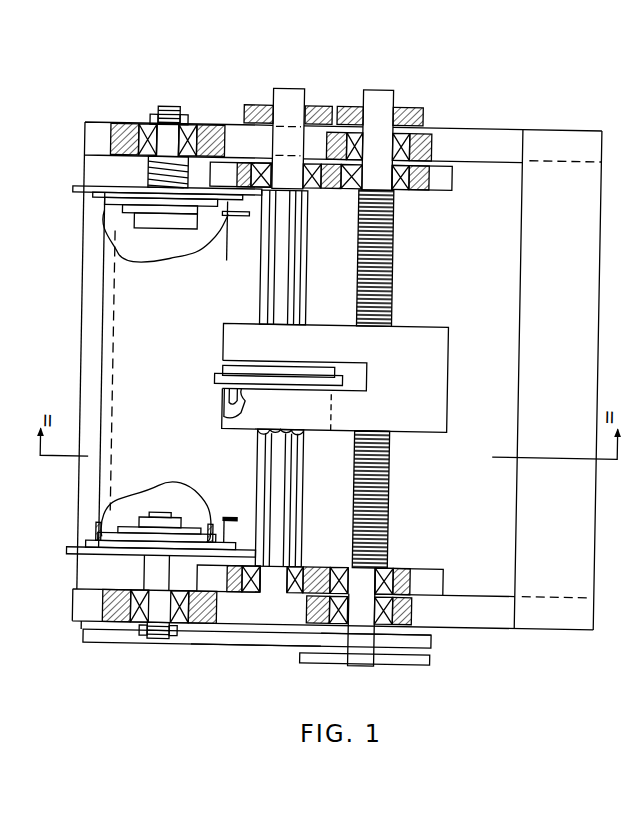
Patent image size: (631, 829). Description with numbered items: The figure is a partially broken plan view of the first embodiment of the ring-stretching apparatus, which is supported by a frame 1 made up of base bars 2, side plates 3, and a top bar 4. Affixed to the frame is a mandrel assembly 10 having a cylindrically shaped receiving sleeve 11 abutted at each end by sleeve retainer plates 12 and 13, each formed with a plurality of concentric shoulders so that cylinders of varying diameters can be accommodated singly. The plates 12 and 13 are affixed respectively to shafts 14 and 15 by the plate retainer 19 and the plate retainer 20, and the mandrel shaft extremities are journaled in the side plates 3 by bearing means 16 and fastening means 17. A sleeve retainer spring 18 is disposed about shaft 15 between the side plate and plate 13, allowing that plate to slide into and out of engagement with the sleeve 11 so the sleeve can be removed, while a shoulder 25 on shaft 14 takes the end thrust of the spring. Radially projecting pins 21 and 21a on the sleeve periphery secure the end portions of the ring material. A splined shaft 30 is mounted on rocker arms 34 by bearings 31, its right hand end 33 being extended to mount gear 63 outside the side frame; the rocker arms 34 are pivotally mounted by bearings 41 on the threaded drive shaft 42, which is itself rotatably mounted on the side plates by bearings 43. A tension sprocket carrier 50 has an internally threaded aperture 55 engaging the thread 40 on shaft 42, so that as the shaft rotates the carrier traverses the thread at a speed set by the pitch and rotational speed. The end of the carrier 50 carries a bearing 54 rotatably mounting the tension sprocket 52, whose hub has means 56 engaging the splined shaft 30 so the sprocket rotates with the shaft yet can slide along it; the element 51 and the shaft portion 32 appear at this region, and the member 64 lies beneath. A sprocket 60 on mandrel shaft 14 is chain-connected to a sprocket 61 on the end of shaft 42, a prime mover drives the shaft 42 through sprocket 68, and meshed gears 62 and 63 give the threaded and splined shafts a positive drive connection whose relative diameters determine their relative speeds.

The frame 1 is at (519, 120).
The base bars 2 is at (85, 515).
The side plates 3 is at (493, 157).
The top bar 4 is at (603, 219).
The mandrel assembly 10 is at (85, 376).
The receiving sleeve 11 is at (106, 338).
The sleeve retainer plate 12 is at (74, 551).
The sleeve retainer plate 13 is at (74, 189).
The shaft 14 is at (170, 509).
The shaft 15 is at (188, 176).
The bearing means 16 is at (214, 134).
The fastening means 17 is at (182, 108).
The sleeve retainer spring 18 is at (149, 161).
The plate retainer 19 is at (196, 511).
The plate retainer 20 is at (167, 228).
The radially projecting pin 21 is at (234, 531).
The radially projecting pin 21a is at (245, 214).
The shoulder 25 is at (134, 612).
The splined shaft 30 is at (308, 486).
The bearings 31 is at (306, 187).
The shaft end 32 is at (284, 587).
The right hand end of splined shaft 33 is at (276, 183).
The rocker arms 34 is at (238, 183).
The thread 40 is at (397, 506).
The bearings 41 is at (413, 177).
The threaded drive shaft 42 is at (382, 623).
The bearings 43 is at (438, 135).
The tension sprocket carrier 50 is at (453, 340).
The bar 51 is at (220, 383).
The tension sprocket 52 is at (227, 366).
The bearing 54 is at (242, 405).
The internally threaded aperture 55 is at (395, 428).
The engaging means 56 is at (303, 430).
The sprocket 60 is at (97, 638).
The sprocket 61 is at (441, 633).
The gear 62 is at (425, 107).
The gear 63 is at (307, 97).
The plate 64 is at (278, 645).
The sprocket 68 is at (441, 653).